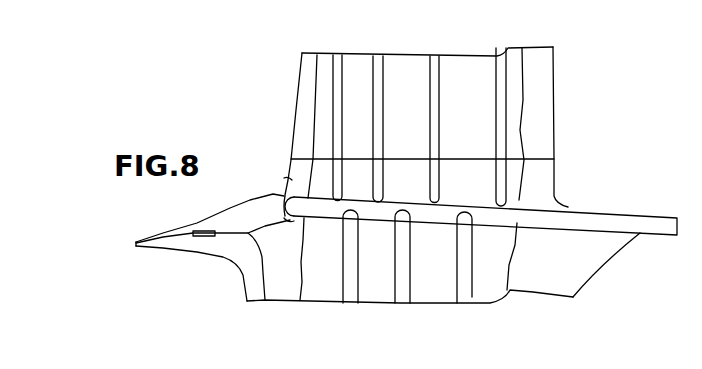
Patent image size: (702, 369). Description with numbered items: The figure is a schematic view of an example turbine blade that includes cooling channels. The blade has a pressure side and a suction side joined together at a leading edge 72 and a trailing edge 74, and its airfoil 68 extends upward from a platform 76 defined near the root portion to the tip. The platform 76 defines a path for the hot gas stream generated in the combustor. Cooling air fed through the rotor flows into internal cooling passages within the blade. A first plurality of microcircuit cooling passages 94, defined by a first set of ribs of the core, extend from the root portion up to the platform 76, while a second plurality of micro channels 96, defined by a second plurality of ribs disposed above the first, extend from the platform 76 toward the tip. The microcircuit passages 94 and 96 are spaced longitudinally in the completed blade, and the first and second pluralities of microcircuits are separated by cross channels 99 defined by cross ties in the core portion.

The airfoil 68 is at (410, 179).
The leading edge 72 is at (296, 110).
The trailing edge 74 is at (556, 125).
The platform 76 is at (629, 212).
The microcircuit cooling passages 94 is at (375, 293).
The micro channels 96 is at (403, 68).
The cross channels 99 is at (285, 198).